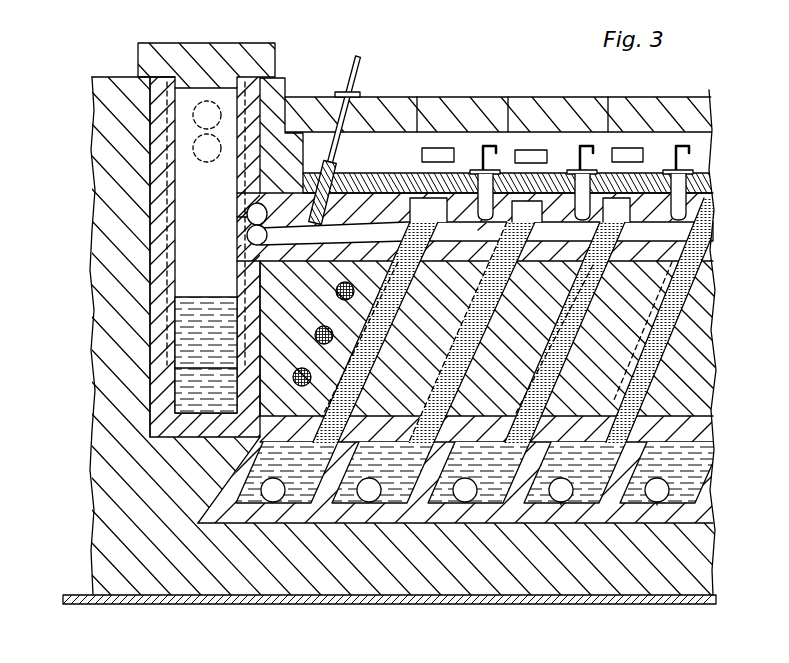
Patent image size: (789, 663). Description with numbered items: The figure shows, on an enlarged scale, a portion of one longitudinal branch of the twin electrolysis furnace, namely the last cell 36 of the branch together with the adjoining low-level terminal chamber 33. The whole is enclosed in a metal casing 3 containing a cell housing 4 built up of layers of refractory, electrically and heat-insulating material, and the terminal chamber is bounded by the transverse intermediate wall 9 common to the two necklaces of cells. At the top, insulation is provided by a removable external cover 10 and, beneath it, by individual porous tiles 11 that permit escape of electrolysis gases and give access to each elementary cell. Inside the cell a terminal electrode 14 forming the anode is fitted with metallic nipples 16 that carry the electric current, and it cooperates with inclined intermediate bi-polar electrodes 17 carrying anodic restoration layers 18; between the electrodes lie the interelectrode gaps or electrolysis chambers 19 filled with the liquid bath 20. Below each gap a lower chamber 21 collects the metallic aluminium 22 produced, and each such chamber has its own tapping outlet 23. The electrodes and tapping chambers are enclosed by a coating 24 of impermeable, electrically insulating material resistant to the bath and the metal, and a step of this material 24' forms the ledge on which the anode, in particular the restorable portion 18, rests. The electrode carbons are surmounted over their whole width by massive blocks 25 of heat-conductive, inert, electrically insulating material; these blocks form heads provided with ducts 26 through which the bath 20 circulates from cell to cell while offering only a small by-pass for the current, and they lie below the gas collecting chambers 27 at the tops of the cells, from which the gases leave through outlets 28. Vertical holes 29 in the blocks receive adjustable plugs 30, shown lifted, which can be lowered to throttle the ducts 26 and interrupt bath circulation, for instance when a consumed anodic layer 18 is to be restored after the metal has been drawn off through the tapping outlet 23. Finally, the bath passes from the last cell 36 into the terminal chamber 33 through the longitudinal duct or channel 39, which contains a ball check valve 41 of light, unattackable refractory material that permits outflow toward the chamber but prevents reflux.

The metal casing 3 is at (335, 605).
The cell housing 4 is at (703, 575).
The transverse intermediate wall 9 is at (118, 262).
The external cover 10 is at (452, 118).
The tile 11 is at (368, 185).
The terminal electrode 14 is at (277, 380).
The metallic nipple 16 is at (349, 289).
The intermediate bi-polar electrode 17 is at (538, 321).
The anodic restoration layer 18 is at (558, 328).
The electrolysis chamber 19 is at (486, 329).
The bath 20 is at (500, 200).
The lower chamber 21 is at (700, 468).
The metallic aluminium 22 is at (466, 481).
The tapping outlet 23 is at (560, 503).
The coating 24 is at (475, 482).
The step of material 24' is at (507, 429).
The massive block 25 is at (695, 218).
The duct 26 is at (697, 231).
The gas collecting chamber 27 is at (475, 322).
The outlet 28 is at (537, 150).
The vertical hole 29 is at (473, 232).
The adjustable plug 30 is at (688, 195).
The terminal chamber 33 is at (190, 350).
The last cell 36 is at (379, 321).
The longitudinal duct 39 is at (238, 218).
The ball check valve 41 is at (246, 236).